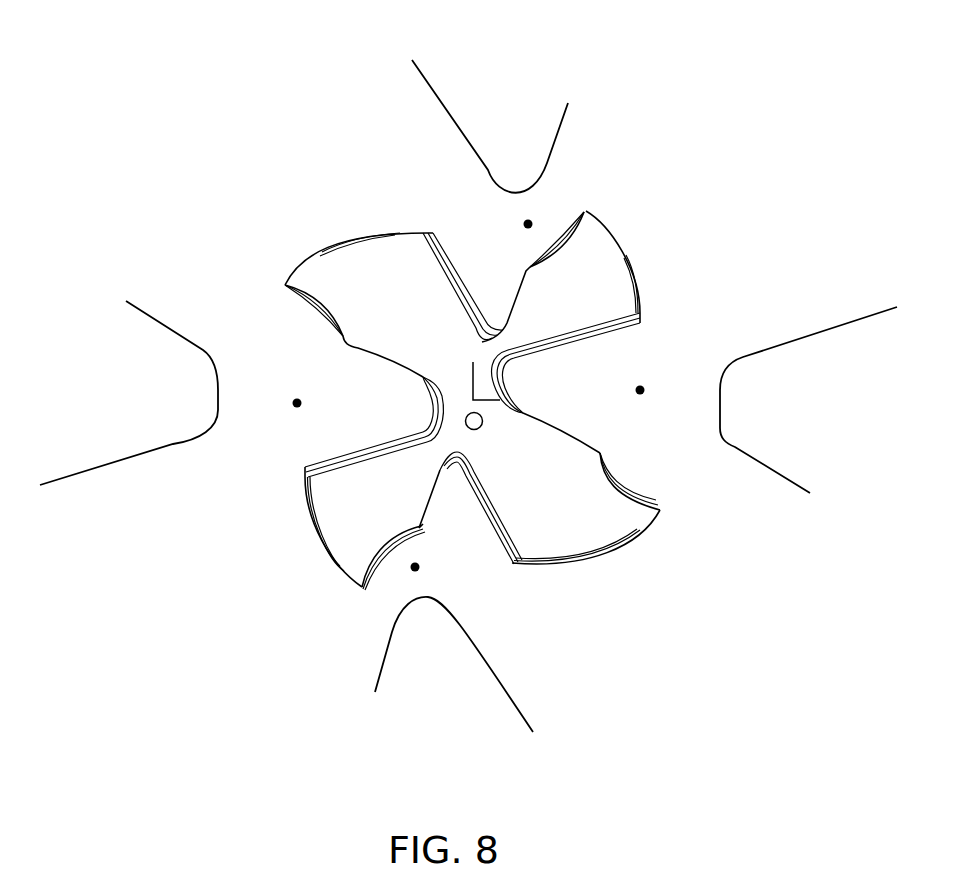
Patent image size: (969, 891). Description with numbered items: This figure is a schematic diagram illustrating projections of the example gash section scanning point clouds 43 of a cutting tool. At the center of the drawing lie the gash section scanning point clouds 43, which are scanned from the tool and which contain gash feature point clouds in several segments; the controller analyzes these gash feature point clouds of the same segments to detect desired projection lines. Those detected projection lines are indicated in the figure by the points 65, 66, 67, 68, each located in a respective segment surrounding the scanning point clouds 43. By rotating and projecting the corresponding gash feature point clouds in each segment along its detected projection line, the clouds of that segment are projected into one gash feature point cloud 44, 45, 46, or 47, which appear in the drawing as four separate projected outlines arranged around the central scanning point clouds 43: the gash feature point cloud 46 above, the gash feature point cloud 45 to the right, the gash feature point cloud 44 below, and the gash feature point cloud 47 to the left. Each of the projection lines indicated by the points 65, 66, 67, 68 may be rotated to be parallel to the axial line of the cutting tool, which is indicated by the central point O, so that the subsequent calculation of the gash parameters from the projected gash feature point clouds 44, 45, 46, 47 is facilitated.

The gash section scanning point clouds 43 is at (318, 250).
The gash feature point cloud 44 is at (510, 695).
The gash feature point cloud 45 is at (833, 325).
The gash feature point cloud 46 is at (437, 92).
The gash feature point cloud 47 is at (98, 463).
The point indicating projection line 65 is at (293, 393).
The point indicating projection line 66 is at (420, 569).
The point indicating projection line 67 is at (643, 383).
The point indicating projection line 68 is at (524, 223).